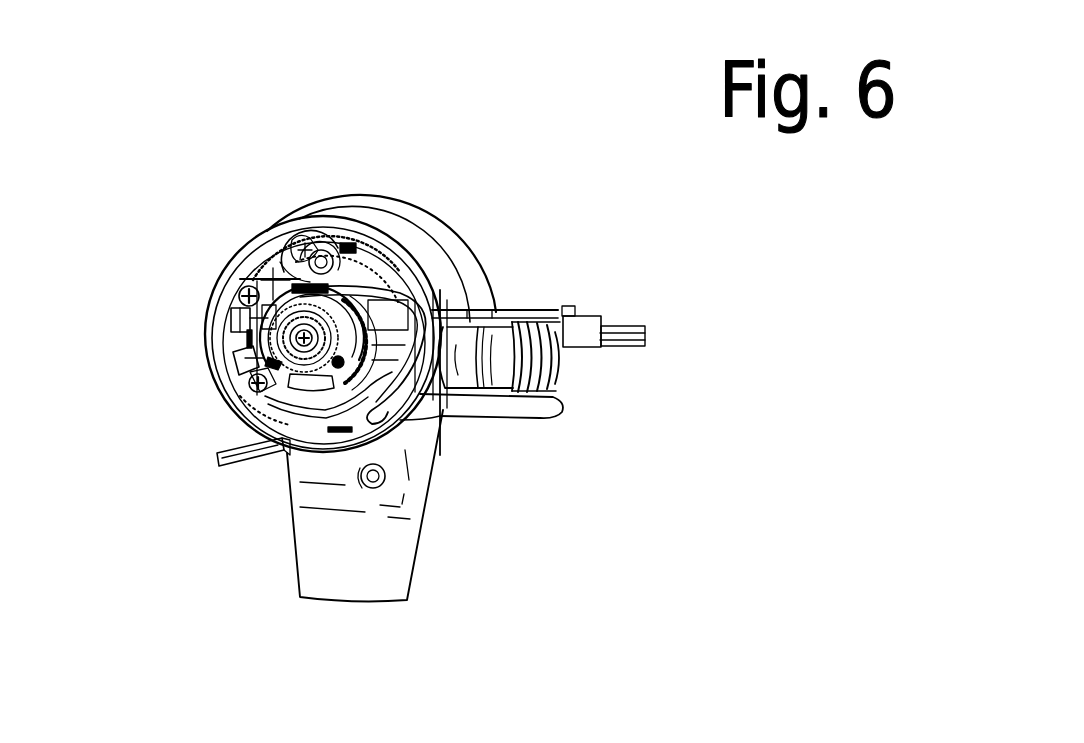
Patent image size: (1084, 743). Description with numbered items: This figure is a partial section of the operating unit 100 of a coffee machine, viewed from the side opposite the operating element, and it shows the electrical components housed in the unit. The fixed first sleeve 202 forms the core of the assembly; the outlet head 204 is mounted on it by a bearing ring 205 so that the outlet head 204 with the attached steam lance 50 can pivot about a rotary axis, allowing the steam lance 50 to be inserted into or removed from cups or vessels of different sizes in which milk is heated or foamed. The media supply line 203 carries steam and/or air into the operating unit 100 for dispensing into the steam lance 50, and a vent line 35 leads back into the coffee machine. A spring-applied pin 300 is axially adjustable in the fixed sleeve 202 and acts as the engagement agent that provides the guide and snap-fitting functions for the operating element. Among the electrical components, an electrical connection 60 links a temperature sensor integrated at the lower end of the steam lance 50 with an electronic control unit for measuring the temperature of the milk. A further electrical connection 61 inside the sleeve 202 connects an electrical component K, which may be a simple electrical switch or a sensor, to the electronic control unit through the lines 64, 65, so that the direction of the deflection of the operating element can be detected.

The operating unit 100 is at (458, 185).
The pin 300 is at (322, 268).
The first sleeve 202 is at (281, 228).
The outlet head 204 is at (470, 264).
The line 64 is at (273, 268).
The electrical component K is at (238, 316).
The bearing ring 205 is at (226, 360).
The line 65 is at (307, 410).
The electrical connection 60 is at (586, 314).
The further electrical connection 61 is at (566, 338).
The vent line 35 is at (560, 367).
The media supply line 203 is at (557, 382).
The steam lance 50 is at (367, 560).